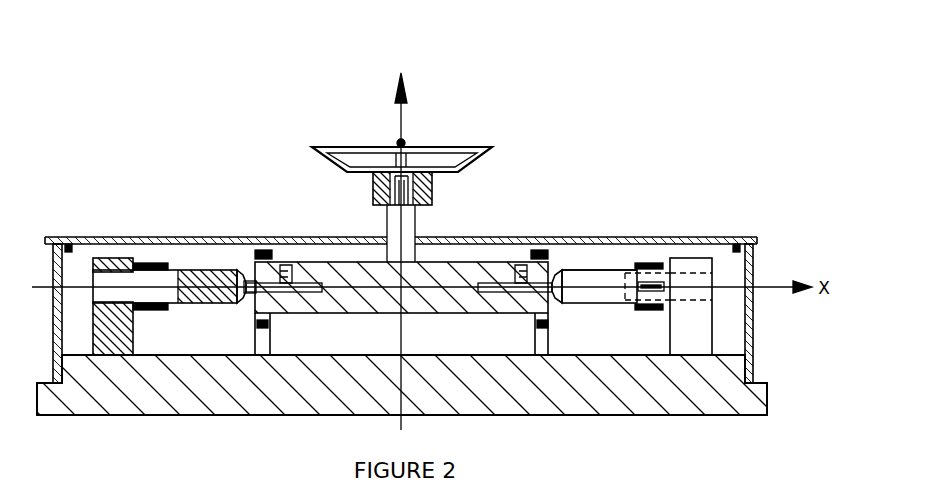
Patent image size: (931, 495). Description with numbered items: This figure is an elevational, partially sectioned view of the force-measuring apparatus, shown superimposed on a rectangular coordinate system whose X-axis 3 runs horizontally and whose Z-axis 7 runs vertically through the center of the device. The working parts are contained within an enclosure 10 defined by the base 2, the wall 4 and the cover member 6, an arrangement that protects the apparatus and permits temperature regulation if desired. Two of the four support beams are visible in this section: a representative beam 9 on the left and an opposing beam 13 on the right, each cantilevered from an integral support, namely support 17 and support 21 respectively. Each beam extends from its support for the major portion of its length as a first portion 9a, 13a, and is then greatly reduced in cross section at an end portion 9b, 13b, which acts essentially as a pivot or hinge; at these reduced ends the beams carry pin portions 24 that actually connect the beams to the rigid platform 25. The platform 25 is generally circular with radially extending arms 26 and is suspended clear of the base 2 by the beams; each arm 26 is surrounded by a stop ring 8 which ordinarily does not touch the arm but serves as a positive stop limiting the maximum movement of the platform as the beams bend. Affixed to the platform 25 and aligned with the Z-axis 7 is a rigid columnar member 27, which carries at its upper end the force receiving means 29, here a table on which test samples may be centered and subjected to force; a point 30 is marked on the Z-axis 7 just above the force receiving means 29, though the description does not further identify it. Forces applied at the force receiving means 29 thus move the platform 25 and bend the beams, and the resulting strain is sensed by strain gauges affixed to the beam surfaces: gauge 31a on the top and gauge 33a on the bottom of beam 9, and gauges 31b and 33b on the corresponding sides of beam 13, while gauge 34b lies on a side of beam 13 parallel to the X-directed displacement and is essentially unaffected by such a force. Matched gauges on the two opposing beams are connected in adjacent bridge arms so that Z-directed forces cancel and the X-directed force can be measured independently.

The base 2 is at (402, 402).
The X-axis 3 is at (420, 313).
The wall 4 is at (759, 251).
The cover member 6 is at (401, 215).
The Z-axis 7 is at (436, 92).
The stop ring 8 is at (276, 330).
The support beam 9 is at (187, 258).
The first portion 9a is at (223, 245).
The second portion 9b is at (238, 316).
The enclosure 10 is at (77, 232).
The support beam 13 is at (599, 313).
The first portion 13a is at (599, 231).
The end portion 13b is at (567, 311).
The integral support 17 is at (98, 306).
The integral support 21 is at (706, 311).
The pin portion 24 is at (406, 239).
The rigid platform 25 is at (401, 307).
The radially extending arm 26 is at (391, 223).
The rigid columnar member 27 is at (452, 182).
The force receiving means 29 is at (421, 143).
The pivot point 30 is at (436, 131).
The strain gauge 31a is at (150, 228).
The strain gauge 31b is at (656, 228).
The strain gauge 33a is at (155, 327).
The strain gauge 33b is at (646, 328).
The strain gauge 34b is at (680, 239).